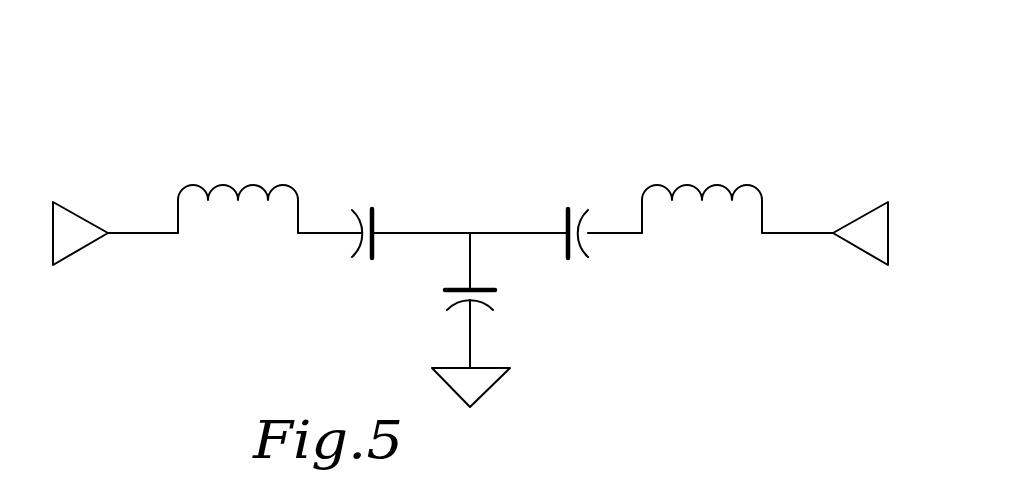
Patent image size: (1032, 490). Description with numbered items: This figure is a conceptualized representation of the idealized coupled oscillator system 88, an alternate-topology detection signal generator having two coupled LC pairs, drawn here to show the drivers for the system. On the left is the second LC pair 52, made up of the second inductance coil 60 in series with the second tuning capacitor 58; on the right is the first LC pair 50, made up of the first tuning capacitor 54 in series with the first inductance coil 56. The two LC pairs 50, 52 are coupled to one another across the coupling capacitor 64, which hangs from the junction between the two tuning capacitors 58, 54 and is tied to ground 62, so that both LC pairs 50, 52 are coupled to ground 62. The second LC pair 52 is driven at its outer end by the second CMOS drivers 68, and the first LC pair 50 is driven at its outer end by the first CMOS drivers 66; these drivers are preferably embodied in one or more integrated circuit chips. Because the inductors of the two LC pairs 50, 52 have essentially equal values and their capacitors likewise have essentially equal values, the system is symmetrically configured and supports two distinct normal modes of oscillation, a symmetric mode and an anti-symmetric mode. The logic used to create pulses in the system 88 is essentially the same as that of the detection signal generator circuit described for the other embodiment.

The idealized coupled oscillator system 88 is at (165, 66).
The second LC pair 52 is at (373, 101).
The first LC pair 50 is at (699, 101).
The second CMOS drivers 68 is at (72, 222).
The second inductance coil 60 is at (263, 186).
The second tuning capacitor 58 is at (375, 222).
The first tuning capacitor 54 is at (563, 232).
The first inductance coil 56 is at (725, 186).
The first CMOS drivers 66 is at (868, 220).
The coupling capacitor 64 is at (468, 290).
The ground 62 is at (487, 378).